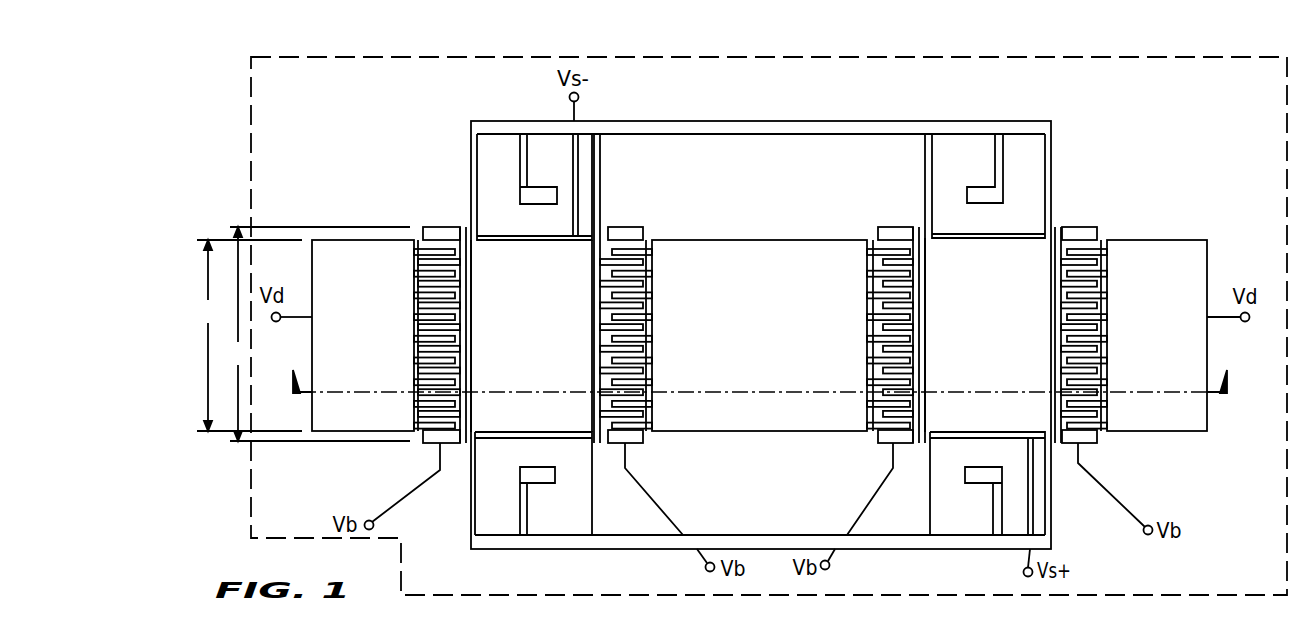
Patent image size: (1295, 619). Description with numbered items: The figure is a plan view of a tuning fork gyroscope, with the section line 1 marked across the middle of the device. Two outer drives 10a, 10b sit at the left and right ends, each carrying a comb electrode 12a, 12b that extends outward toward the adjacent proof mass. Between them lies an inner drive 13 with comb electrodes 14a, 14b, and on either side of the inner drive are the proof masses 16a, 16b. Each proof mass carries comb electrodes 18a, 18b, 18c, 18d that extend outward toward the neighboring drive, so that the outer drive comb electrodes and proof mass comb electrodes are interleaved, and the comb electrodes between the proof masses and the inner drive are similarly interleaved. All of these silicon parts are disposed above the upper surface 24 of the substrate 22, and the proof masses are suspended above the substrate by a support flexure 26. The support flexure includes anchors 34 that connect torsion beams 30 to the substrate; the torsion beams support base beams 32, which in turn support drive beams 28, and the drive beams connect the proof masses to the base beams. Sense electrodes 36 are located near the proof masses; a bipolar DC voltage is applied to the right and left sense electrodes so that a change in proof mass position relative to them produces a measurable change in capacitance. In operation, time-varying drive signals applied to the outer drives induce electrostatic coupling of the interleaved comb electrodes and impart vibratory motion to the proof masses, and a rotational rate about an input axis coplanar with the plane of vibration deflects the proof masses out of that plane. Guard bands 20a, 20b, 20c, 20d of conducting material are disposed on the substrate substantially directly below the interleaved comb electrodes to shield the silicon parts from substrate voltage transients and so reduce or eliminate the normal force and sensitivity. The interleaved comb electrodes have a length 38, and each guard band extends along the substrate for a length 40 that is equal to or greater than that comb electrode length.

The section line 1- 1 is at (760, 368).
The outer drive 10a is at (345, 262).
The outer drive 10b is at (1138, 250).
The comb electrode 12a is at (420, 247).
The comb electrode 12b is at (1105, 247).
The inner drive 13 is at (757, 345).
The comb electrode 14a is at (645, 240).
The comb electrode 14b is at (875, 250).
The proof mass 16a is at (503, 345).
The proof mass 16b is at (968, 345).
The comb electrode 18a is at (468, 435).
The comb electrode 18b is at (615, 240).
The comb electrode 18c is at (913, 442).
The comb electrode 18d is at (1062, 447).
The guard band 20a is at (430, 447).
The guard band 20b is at (640, 445).
The guard band 20c is at (885, 445).
The guard band 20d is at (1078, 228).
The substrate 22 is at (250, 167).
The upper surface 24 is at (359, 125).
The support flexure 26 is at (751, 112).
The drive beam 28 is at (595, 150).
The torsion beam 30 is at (522, 150).
The base beam 32 is at (907, 542).
The anchor 34 is at (540, 475).
The sense electrode 36 is at (507, 232).
The length 38 is at (249, 335).
The length 40 is at (318, 334).